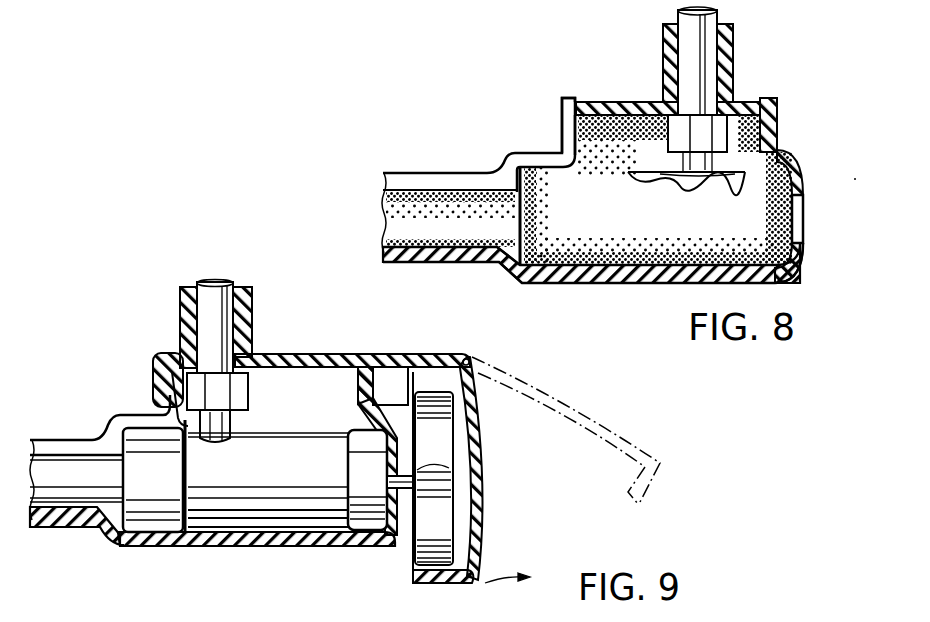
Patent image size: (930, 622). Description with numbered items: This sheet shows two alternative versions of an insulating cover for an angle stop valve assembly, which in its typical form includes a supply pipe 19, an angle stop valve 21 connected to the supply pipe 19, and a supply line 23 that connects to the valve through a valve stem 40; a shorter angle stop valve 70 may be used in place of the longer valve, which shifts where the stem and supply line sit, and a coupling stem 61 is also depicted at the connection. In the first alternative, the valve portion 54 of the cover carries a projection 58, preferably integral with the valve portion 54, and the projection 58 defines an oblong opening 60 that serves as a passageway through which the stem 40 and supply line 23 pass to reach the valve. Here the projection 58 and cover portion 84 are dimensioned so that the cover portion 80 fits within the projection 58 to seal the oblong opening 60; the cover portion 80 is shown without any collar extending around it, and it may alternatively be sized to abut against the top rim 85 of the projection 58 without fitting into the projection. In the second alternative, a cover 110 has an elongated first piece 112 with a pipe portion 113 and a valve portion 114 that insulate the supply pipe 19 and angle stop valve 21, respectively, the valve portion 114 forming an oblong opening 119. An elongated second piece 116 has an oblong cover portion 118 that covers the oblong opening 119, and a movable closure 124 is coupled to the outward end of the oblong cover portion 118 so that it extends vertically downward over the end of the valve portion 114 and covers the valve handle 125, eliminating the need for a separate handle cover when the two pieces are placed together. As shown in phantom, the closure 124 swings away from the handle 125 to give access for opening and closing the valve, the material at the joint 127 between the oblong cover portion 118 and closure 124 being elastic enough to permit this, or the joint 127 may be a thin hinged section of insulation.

In FIG. 9, the supply pipe 19 is at (62, 441).
In FIG. 9, the angle stop valve 21 is at (274, 482).
In FIG. 8, the supply line 23 is at (687, 50).
In FIG. 9, the supply line 23 is at (216, 282).
In FIG. 8, the valve stem 40 is at (690, 171).
In FIG. 9, the valve stem 40 is at (242, 419).
In FIG. 8, the valve portion 54 is at (546, 287).
In FIG. 8, the projection 58 is at (778, 128).
In FIG. 8, the oblong opening 60 is at (572, 96).
In FIG. 9, the coupling stem 61 is at (462, 467).
In FIG. 8, the angle stop valve 70 is at (706, 186).
In FIG. 8, the cover portion 80 is at (613, 103).
In FIG. 8, the cover portion 84 is at (726, 45).
In FIG. 8, the top rim 85 is at (777, 107).
In FIG. 9, the cover 110 is at (304, 315).
In FIG. 9, the first piece 112 is at (118, 551).
In FIG. 9, the pipe portion 113 is at (39, 531).
In FIG. 9, the valve portion 114 is at (178, 548).
In FIG. 9, the second piece 116 is at (385, 351).
In FIG. 9, the oblong cover portion 118 is at (410, 355).
In FIG. 9, the oblong opening 119 is at (298, 356).
In FIG. 9, the closure 124 is at (482, 520).
In FIG. 9, the valve handle 125 is at (466, 433).
In FIG. 9, the joint 127 is at (467, 358).